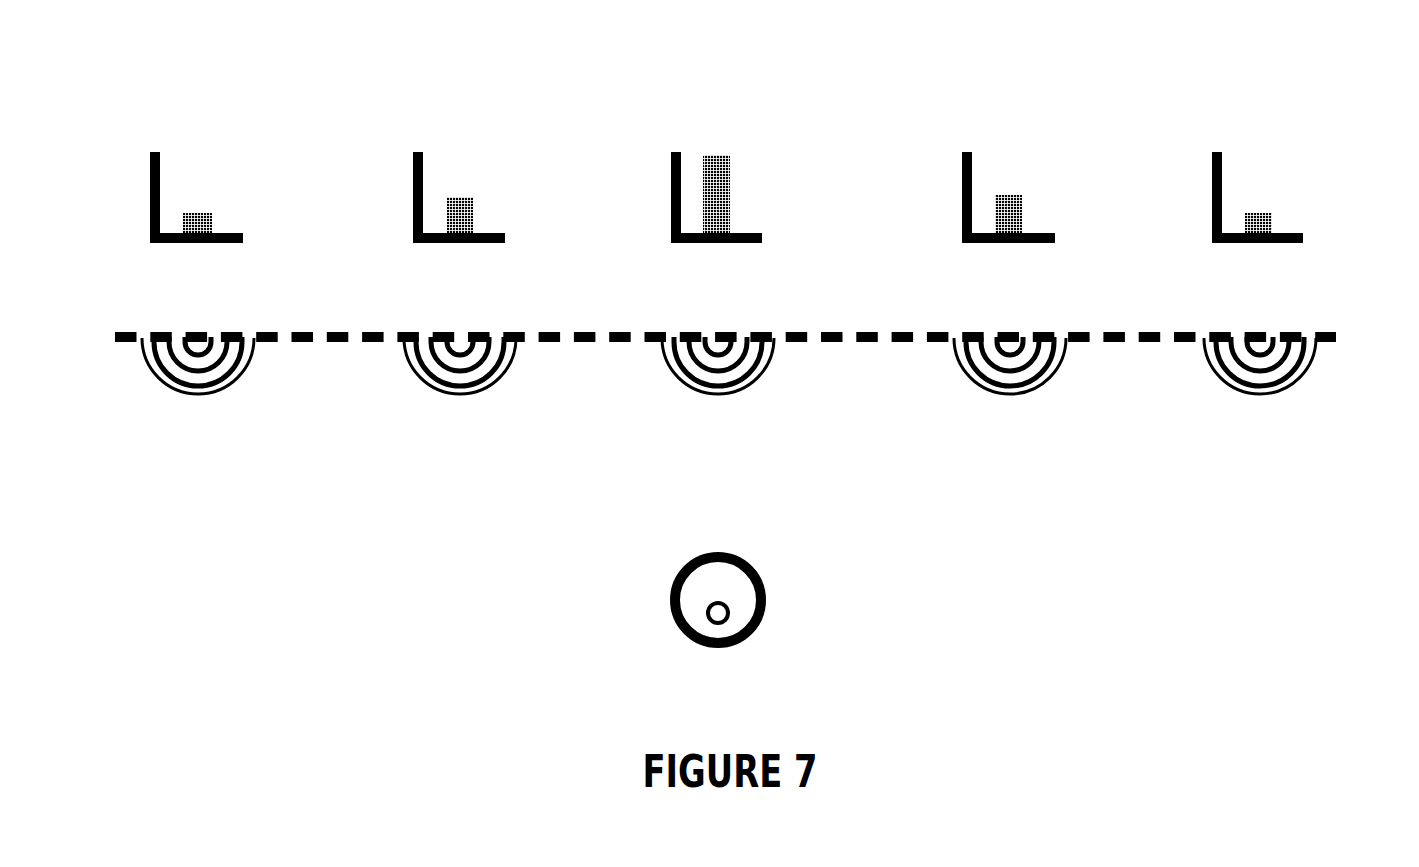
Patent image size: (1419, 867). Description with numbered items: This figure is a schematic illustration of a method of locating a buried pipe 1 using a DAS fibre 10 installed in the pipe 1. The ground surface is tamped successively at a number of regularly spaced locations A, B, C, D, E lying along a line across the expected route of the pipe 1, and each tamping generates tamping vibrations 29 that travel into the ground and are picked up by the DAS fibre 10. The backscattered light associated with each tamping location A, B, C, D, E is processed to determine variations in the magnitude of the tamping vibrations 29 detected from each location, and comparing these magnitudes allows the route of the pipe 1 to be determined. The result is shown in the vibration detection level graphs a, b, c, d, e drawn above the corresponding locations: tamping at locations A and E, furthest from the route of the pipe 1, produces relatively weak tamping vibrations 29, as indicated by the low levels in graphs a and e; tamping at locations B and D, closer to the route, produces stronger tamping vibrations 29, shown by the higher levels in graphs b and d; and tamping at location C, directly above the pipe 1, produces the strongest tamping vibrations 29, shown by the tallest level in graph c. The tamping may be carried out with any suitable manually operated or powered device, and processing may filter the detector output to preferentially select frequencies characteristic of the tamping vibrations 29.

The pipe 1 is at (689, 552).
The DAS fibre 10 is at (724, 604).
The tamping vibrations 29 is at (780, 399).
The tamping location A is at (210, 332).
The tamping location B is at (467, 326).
The tamping location C is at (730, 334).
The tamping location D is at (1020, 332).
The tamping location E is at (1269, 332).
The vibration detection level graph a is at (213, 207).
The vibration detection level graph b is at (473, 194).
The vibration detection level graph c is at (732, 152).
The vibration detection level graph d is at (1025, 194).
The vibration detection level graph e is at (1273, 211).